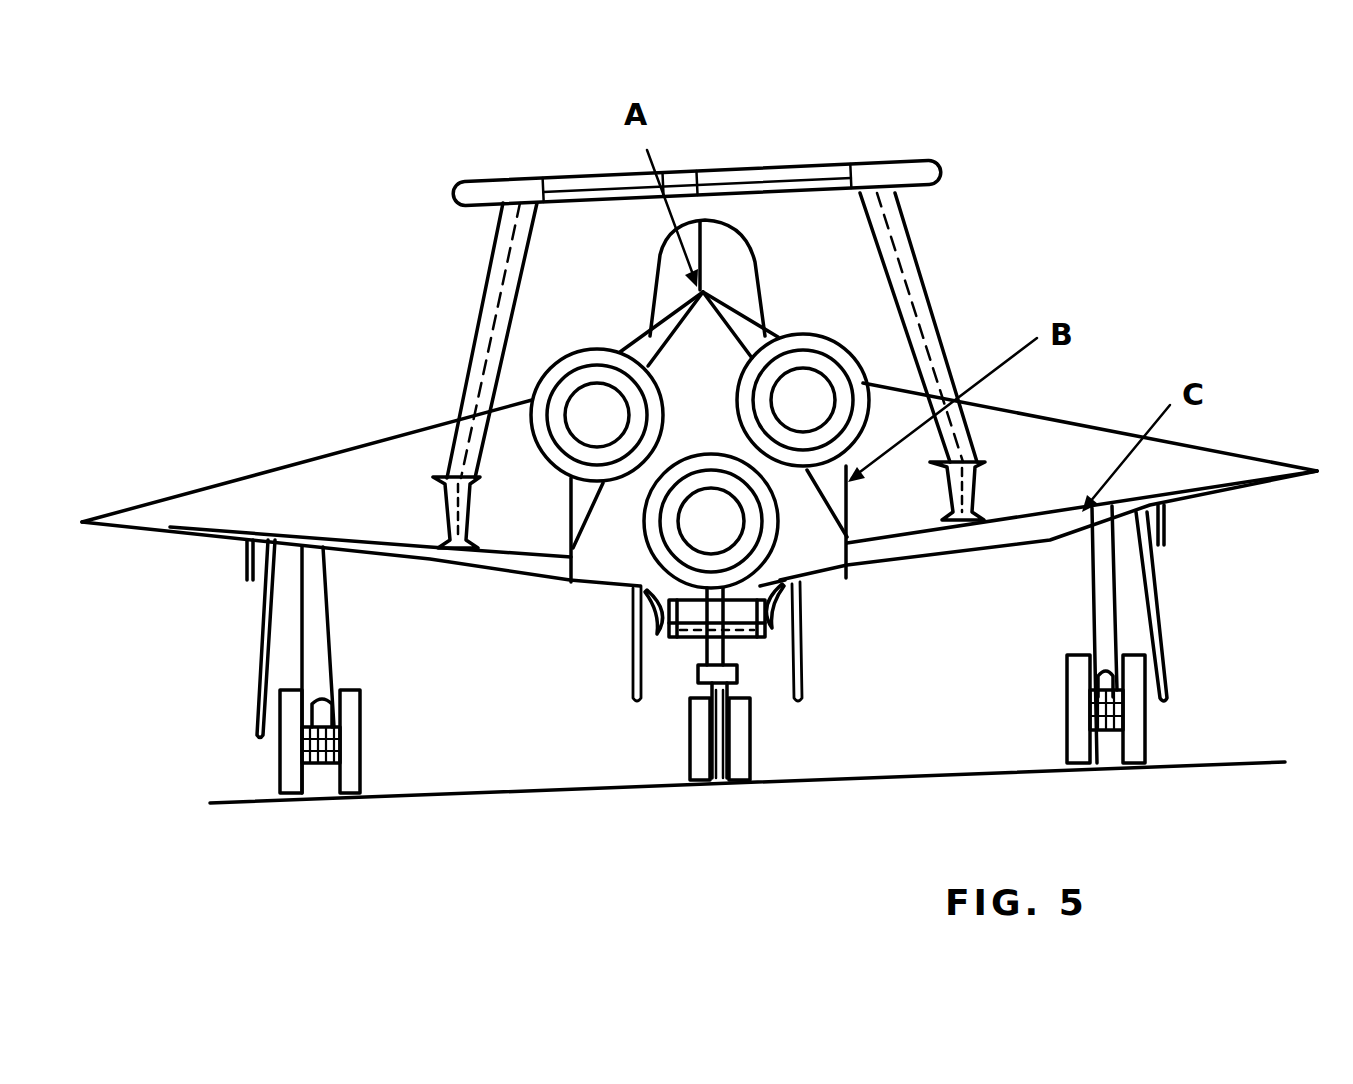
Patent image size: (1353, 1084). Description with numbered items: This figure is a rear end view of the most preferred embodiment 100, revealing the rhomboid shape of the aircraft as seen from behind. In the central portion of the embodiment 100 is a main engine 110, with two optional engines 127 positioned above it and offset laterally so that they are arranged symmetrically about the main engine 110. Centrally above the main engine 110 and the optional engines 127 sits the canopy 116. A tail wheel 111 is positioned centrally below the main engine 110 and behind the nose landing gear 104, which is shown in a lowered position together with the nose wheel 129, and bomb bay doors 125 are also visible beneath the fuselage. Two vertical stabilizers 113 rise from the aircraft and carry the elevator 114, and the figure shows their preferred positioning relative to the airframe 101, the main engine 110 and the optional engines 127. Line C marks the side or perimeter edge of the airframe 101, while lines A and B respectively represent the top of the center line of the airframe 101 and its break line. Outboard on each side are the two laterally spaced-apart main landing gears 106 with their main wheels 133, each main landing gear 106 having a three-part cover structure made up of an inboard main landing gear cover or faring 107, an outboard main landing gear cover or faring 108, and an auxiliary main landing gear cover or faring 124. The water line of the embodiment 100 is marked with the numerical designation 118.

The most preferred embodiment 100 is at (288, 197).
The airframe 101 is at (307, 478).
The nose landing gear 104 is at (700, 670).
The main landing gear 106 is at (317, 635).
The inboard main landing gear cover or faring 107 is at (634, 681).
The outboard main landing gear cover or faring 108 is at (255, 687).
The main engine 110 is at (693, 522).
The tail wheel 111 is at (755, 581).
The vertical stabilizer 113 is at (480, 328).
The elevator 114 is at (773, 187).
The canopy 116 is at (733, 272).
The water line 118 is at (492, 802).
The auxiliary main landing gear cover or faring 124 is at (243, 566).
The bomb bay doors 125 is at (643, 618).
The optional engine 127 is at (590, 395).
The nose wheel 129 is at (743, 763).
The main wheel 133 is at (295, 788).